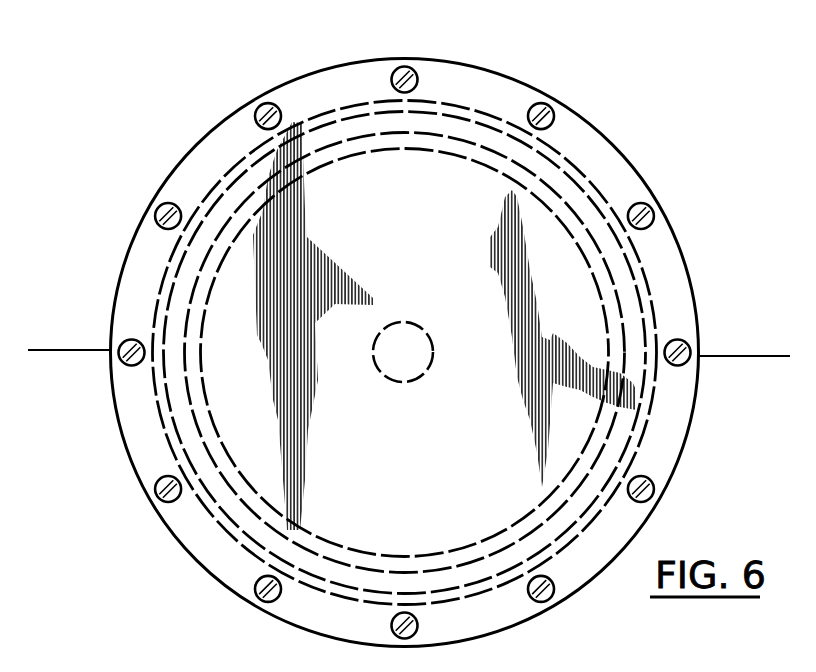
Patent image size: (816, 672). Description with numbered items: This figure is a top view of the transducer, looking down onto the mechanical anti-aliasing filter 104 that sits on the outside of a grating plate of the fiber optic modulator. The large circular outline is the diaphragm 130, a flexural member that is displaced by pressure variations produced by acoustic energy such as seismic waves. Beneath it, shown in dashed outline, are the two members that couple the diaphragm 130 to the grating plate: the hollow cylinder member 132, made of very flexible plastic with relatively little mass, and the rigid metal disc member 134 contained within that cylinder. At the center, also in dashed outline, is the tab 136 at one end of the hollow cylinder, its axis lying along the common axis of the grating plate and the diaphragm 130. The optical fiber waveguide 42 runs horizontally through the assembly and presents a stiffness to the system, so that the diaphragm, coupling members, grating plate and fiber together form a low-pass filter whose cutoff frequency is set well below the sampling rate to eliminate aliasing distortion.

The mechanical anti-aliasing filter 104 is at (113, 281).
The diaphragm 130 is at (498, 86).
The hollow cylinder member 132 is at (200, 201).
The metal disc member 134 is at (252, 152).
The tab 136 is at (410, 322).
The optical fiber waveguide 42 is at (86, 352).